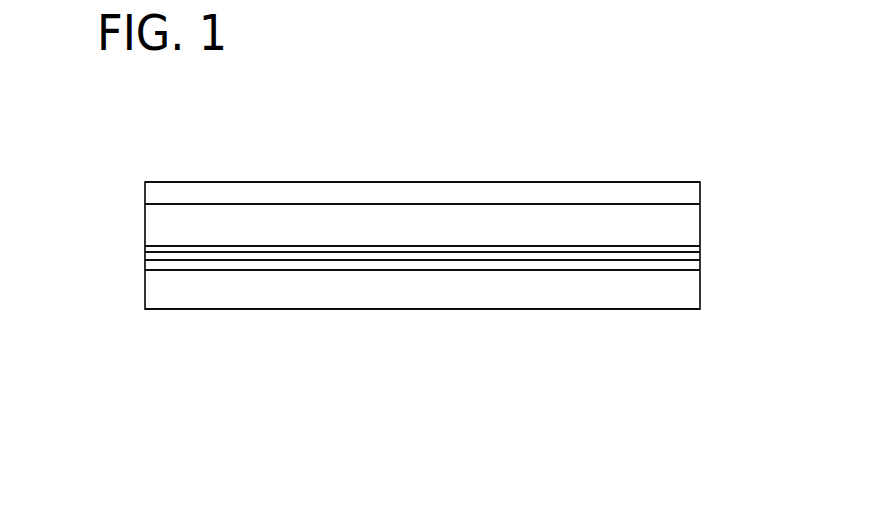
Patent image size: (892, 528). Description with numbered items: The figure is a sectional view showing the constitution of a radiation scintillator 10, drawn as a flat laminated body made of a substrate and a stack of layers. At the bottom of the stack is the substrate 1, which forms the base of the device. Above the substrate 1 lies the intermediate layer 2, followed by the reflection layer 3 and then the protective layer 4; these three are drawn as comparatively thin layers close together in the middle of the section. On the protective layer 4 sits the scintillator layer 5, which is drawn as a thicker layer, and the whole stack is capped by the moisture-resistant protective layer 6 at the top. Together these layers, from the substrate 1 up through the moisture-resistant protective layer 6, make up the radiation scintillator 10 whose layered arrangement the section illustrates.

The radiation scintillator 10 is at (507, 170).
The substrate 1 is at (686, 298).
The intermediate layer 2 is at (692, 267).
The reflection layer 3 is at (692, 255).
The protective layer 4 is at (691, 248).
The scintillator layer 5 is at (686, 222).
The moisture-resistant protective layer 6 is at (690, 195).